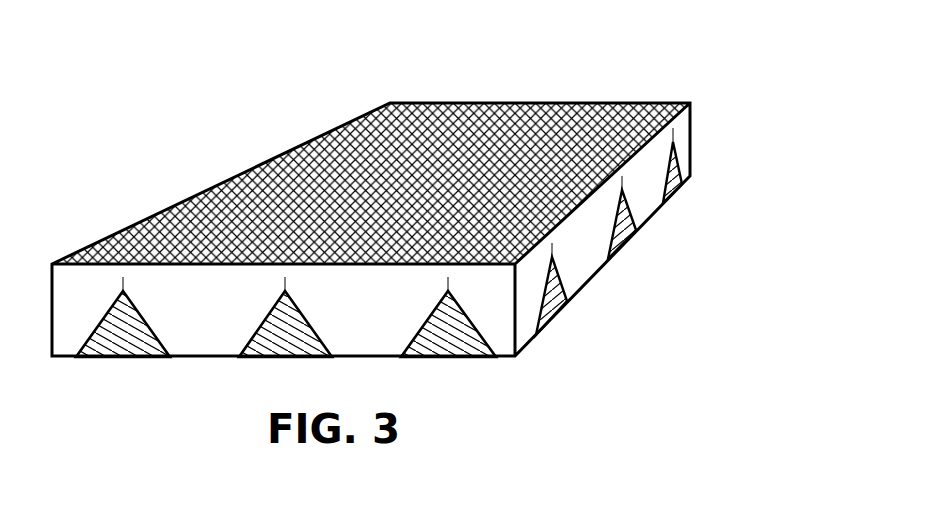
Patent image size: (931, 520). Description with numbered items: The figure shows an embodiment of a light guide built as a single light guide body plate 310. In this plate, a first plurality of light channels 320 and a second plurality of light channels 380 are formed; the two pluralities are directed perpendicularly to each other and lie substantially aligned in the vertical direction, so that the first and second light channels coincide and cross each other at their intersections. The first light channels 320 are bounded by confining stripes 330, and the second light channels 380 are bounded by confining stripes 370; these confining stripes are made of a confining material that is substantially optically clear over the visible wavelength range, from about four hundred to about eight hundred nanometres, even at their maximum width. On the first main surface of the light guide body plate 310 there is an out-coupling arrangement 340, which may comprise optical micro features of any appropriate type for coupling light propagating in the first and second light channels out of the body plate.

The light guide body plate 310 is at (680, 136).
The first light channels 320 is at (367, 332).
The confining stripes 330 is at (452, 332).
The out-coupling arrangement 340 is at (430, 128).
The confining stripes 370 is at (623, 227).
The second light channels 380 is at (568, 257).